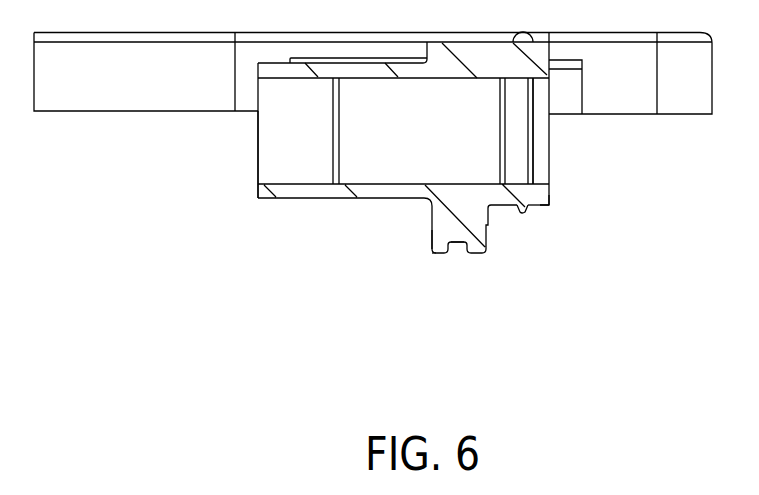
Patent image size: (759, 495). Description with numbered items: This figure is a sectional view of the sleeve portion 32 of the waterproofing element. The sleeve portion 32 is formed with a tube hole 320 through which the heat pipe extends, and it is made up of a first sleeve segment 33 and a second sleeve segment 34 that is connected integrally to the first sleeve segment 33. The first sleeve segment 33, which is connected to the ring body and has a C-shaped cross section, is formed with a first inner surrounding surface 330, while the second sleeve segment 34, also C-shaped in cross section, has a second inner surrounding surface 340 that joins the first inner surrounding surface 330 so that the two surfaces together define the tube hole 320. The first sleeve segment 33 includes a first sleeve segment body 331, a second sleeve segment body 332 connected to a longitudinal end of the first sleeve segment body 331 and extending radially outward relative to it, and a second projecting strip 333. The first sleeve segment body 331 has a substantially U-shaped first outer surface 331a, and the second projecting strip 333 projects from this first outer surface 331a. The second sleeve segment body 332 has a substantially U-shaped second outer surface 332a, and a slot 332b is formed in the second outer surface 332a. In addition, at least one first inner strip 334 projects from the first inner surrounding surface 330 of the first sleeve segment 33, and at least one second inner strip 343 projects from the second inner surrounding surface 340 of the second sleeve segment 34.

The sleeve portion 32 is at (238, 222).
The first sleeve segment 33 is at (553, 385).
The second sleeve segment 34 is at (257, 227).
The tube hole 320 is at (550, 132).
The first inner surrounding surface 330 is at (543, 183).
The first sleeve segment body 331 is at (553, 230).
The first outer surface 331a is at (549, 206).
The second sleeve segment body 332 is at (432, 262).
The second outer surface 332a is at (440, 262).
The slot 332b is at (460, 245).
The second projecting strip 333 is at (522, 211).
The first inner strip 334 is at (528, 148).
The second inner surrounding surface 340 is at (290, 183).
The second inner strip 343 is at (339, 127).